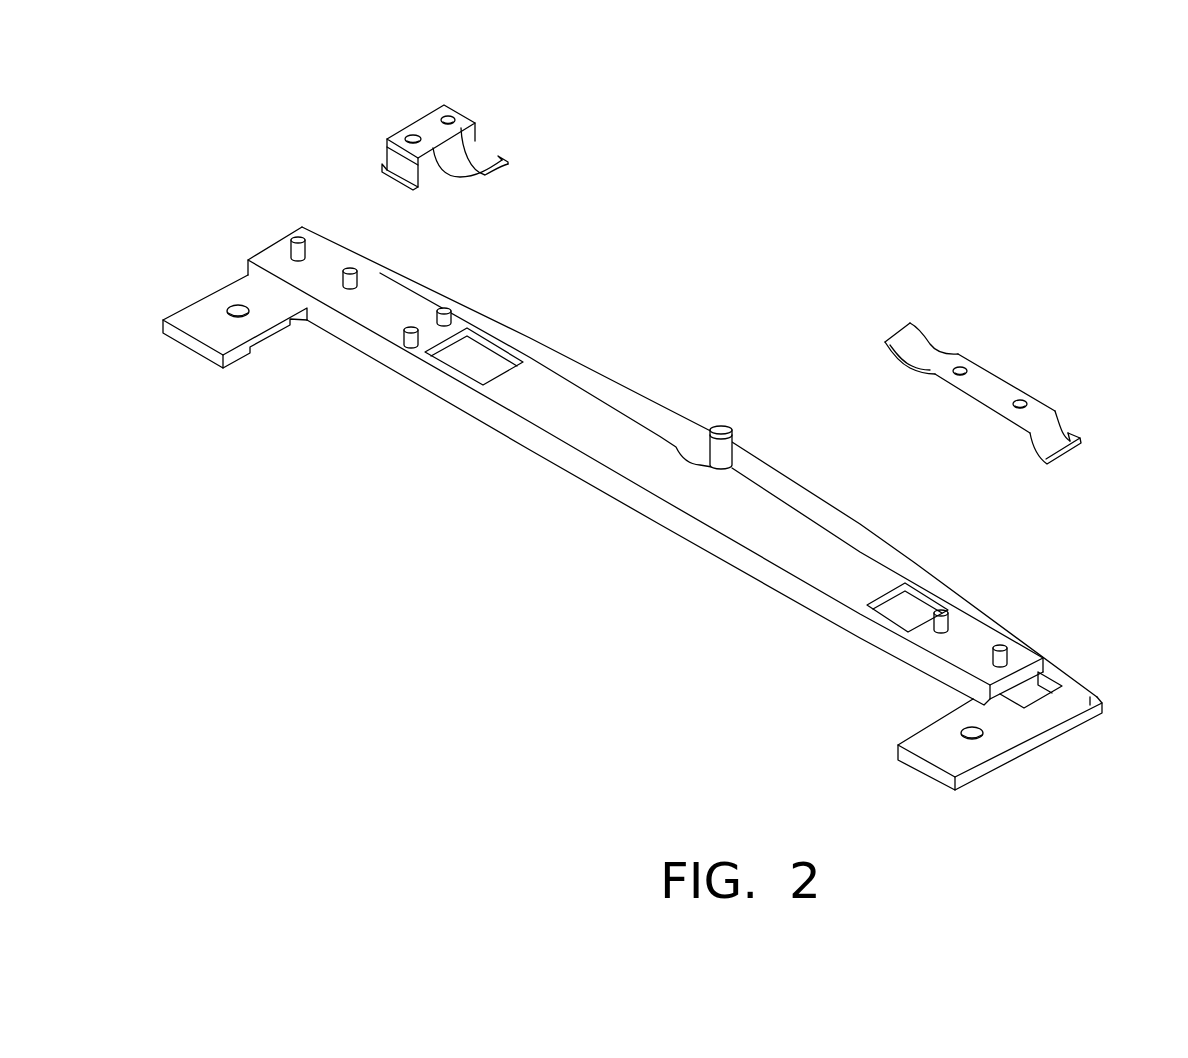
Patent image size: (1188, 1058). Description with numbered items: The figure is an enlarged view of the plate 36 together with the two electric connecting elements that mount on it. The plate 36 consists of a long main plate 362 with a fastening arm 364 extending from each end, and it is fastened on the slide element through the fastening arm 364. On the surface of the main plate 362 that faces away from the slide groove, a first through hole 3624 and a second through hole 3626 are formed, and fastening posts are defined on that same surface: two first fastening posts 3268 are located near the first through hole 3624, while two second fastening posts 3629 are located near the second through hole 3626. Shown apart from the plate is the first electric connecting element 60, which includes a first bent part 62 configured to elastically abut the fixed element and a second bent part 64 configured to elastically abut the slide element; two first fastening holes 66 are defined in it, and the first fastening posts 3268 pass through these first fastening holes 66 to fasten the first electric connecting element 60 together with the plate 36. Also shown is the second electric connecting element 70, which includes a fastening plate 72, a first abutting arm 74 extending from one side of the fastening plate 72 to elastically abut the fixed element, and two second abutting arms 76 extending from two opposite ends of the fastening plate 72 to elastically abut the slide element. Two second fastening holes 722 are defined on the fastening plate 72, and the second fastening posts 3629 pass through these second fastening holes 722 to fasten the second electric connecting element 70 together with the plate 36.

The plate 36 is at (662, 508).
The main plate 362 is at (798, 540).
The fastening arm 364 is at (1010, 718).
The first through hole 3624 is at (910, 605).
The second through hole 3626 is at (478, 355).
The second fastening post 3629 is at (445, 308).
The positioning post 3268 is at (1002, 647).
The first electric connecting element 60 is at (1019, 360).
The first bent part 62 is at (913, 358).
The second bent part 64 is at (1053, 437).
The first fastening hole 66 is at (1022, 404).
The second electric connecting element 70 is at (424, 143).
The fastening plate 72 is at (433, 128).
The second fastening hole 722 is at (410, 132).
The first abutting arm 74 is at (462, 167).
The second abutting arm 76 is at (400, 154).